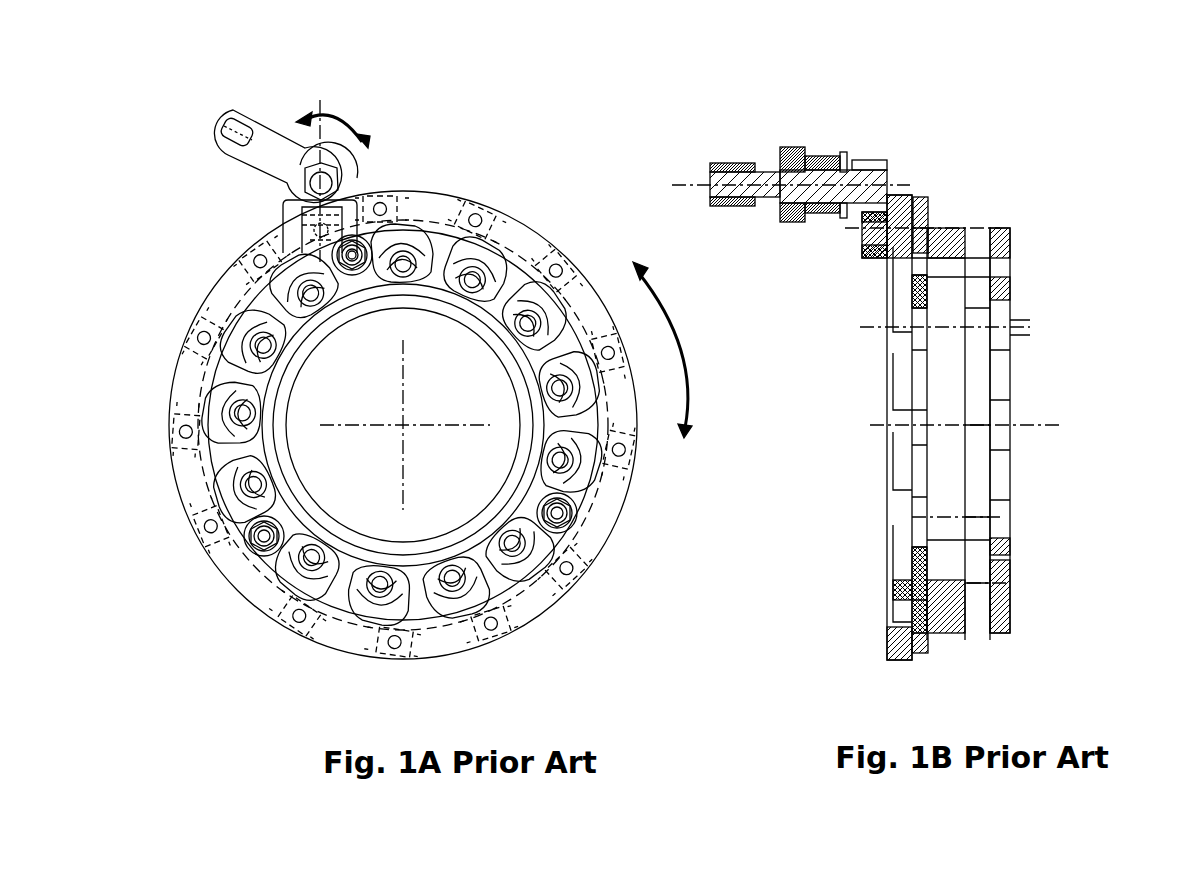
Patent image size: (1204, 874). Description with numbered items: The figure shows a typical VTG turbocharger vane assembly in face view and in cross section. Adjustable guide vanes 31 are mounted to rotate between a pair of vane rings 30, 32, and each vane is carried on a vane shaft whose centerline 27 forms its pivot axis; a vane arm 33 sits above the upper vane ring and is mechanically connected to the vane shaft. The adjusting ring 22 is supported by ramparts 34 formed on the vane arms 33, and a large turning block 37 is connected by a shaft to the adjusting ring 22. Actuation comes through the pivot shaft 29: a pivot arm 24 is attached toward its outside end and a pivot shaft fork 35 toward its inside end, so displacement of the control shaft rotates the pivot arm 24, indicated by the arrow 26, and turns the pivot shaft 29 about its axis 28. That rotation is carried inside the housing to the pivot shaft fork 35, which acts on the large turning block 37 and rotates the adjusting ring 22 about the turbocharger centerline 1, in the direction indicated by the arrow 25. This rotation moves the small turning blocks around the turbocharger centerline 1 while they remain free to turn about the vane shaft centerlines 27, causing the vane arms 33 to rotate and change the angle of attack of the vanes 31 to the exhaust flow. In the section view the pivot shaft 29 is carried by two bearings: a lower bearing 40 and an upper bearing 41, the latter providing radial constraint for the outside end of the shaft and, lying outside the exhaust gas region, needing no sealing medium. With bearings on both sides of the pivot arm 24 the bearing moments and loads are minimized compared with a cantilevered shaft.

In FIG. 1B, the turbocharger centerline 1 is at (1045, 432).
In FIG. 1A, the adjusting ring 22 is at (608, 522).
In FIG. 1B, the adjusting ring 22 is at (885, 655).
In FIG. 1A, the pivot arm 24 is at (275, 160).
In FIG. 1B, the pivot arm 24 is at (790, 150).
In FIG. 1A, the rotation direction arrow of unison ring 25 is at (690, 360).
In FIG. 1A, the pivot direction arrow of lever 26 is at (340, 118).
In FIG. 1B, the centerlines of the vane shafts 27 is at (1018, 327).
In FIG. 1B, the axis of the pivot shaft 28 is at (683, 182).
In FIG. 1A, the pivot shaft 29 is at (347, 235).
In FIG. 1B, the pivot shaft 29 is at (862, 173).
In FIG. 1B, the vane ring 30 is at (1005, 228).
In FIG. 1B, the adjustable guide vanes 31 is at (977, 295).
In FIG. 1B, the vane ring 32 is at (945, 228).
In FIG. 1A, the vane arm 33 is at (265, 300).
In FIG. 1B, the vane arm 33 is at (918, 230).
In FIG. 1A, the ramparts 34 is at (258, 525).
In FIG. 1A, the pivot shaft fork 35 is at (368, 248).
In FIG. 1A, the large turning block 37 is at (292, 243).
In FIG. 1B, the large turning block 37 is at (867, 255).
In FIG. 1B, the lower bearing 40 is at (827, 153).
In FIG. 1B, the upper bearing 41 is at (718, 163).